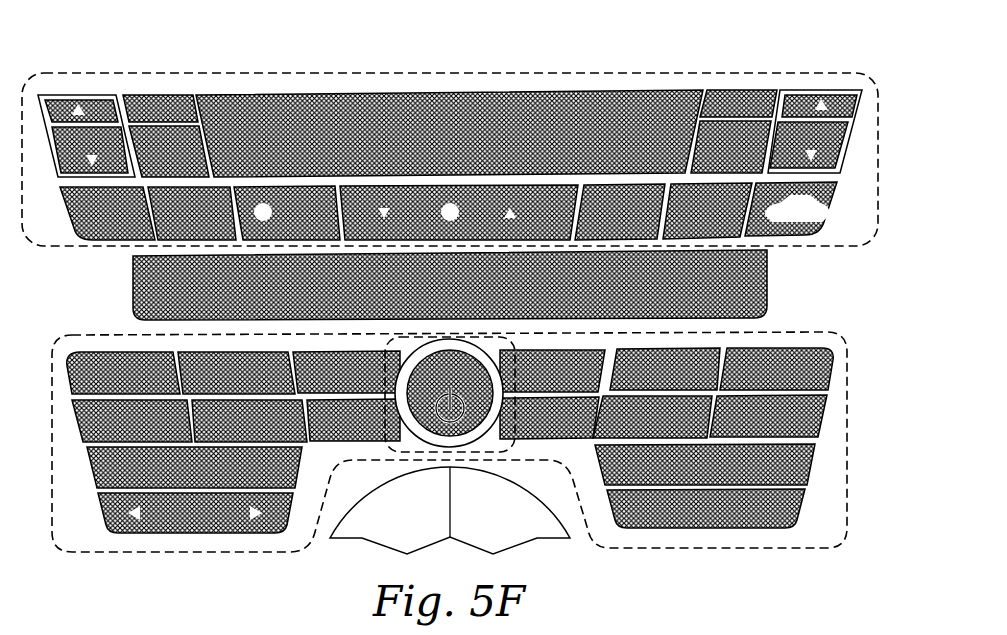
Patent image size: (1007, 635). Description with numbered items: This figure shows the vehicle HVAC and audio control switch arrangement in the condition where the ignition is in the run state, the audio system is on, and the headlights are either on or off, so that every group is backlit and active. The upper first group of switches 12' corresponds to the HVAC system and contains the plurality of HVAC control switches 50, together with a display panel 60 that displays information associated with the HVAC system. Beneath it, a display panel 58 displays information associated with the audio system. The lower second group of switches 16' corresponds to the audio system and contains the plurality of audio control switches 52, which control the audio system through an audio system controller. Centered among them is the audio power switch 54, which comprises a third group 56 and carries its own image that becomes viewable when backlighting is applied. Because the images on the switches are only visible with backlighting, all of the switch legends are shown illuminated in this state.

The first group of switches 12' is at (450, 135).
The display panel 60 is at (355, 93).
The HVAC control switches 50 is at (56, 217).
The display panel 58 is at (768, 279).
The second group of switches 16' is at (449, 469).
The audio control switches 52 is at (56, 374).
The audio power switch 54 is at (470, 445).
The third group 56 is at (430, 450).